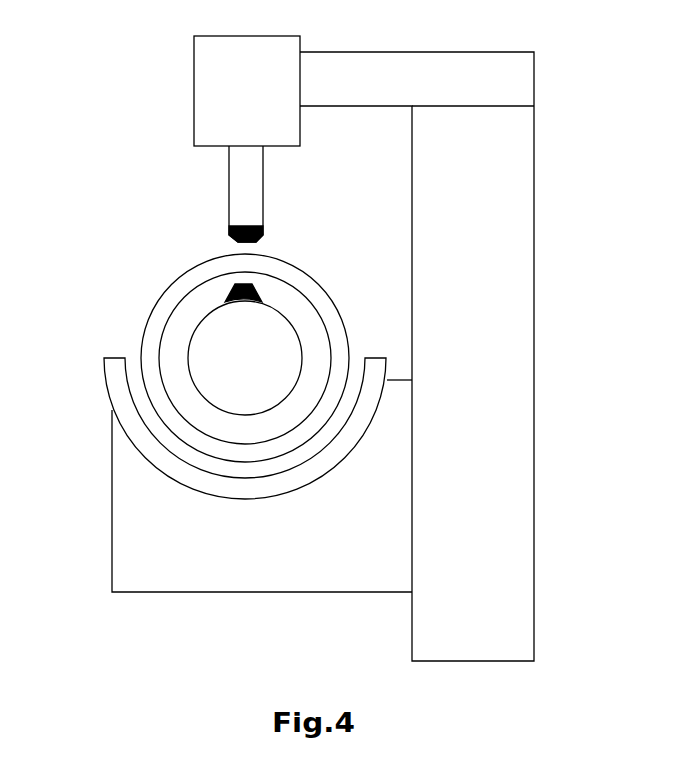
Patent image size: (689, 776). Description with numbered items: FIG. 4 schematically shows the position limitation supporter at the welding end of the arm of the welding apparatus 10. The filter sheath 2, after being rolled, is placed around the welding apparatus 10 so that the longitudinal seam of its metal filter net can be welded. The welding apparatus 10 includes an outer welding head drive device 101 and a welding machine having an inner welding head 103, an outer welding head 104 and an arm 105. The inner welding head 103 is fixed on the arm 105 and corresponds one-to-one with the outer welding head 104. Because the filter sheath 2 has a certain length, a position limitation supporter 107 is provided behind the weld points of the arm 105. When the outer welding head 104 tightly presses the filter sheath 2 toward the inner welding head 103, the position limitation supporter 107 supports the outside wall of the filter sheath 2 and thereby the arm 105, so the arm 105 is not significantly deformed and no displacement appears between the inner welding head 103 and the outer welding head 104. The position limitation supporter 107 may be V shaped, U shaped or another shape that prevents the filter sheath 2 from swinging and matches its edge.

The welding apparatus 10 is at (425, 625).
The outer welding head drive device 101 is at (207, 79).
The outer welding head 104 is at (233, 176).
The inner welding head 103 is at (228, 293).
The filter sheath 2 is at (148, 335).
The arm 105 is at (200, 368).
The position limitation supporter 107 is at (157, 455).